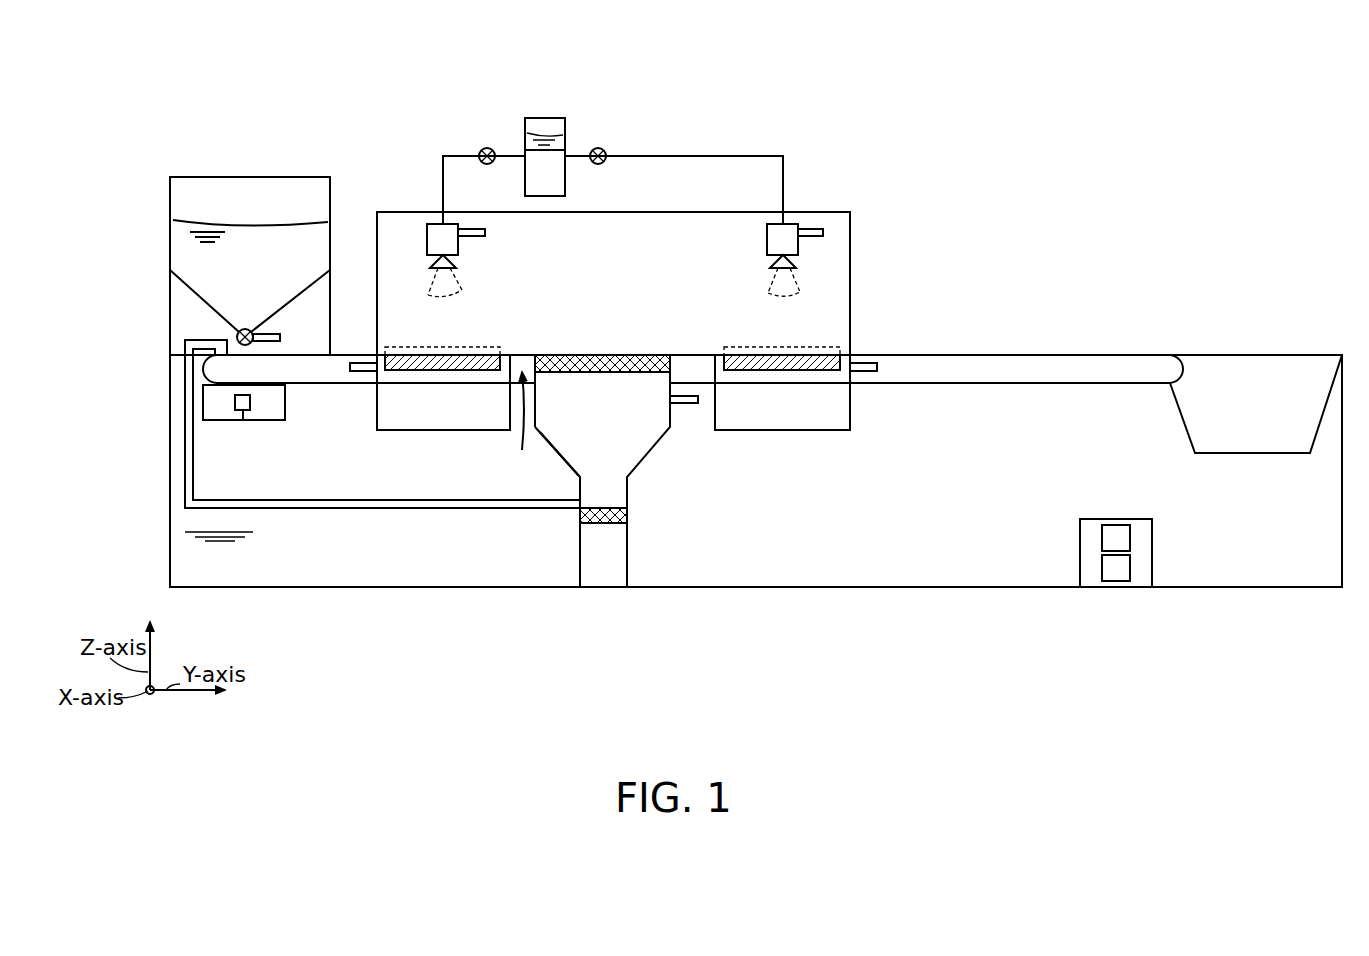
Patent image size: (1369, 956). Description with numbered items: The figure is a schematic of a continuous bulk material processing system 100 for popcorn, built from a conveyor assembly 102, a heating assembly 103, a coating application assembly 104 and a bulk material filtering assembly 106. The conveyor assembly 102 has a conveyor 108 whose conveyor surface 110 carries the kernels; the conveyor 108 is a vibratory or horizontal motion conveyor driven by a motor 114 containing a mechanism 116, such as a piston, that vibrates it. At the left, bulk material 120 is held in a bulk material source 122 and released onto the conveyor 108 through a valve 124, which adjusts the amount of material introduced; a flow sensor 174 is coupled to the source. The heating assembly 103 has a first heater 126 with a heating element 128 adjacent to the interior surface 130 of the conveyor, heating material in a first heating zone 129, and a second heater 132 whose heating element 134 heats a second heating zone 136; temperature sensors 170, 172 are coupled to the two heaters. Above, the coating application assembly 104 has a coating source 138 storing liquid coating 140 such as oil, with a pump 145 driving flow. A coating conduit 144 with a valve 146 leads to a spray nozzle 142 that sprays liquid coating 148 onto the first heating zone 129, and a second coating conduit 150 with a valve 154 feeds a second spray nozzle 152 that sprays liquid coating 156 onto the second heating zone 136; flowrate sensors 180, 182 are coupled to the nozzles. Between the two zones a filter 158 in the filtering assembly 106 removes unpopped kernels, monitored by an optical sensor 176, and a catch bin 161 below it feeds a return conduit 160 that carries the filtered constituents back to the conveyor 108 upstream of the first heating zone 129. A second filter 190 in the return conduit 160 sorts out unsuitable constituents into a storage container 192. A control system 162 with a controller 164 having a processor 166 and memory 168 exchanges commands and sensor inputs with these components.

The bulk material processing system 100 is at (108, 126).
The conveyor assembly 102 is at (1218, 328).
The heating assembly 103 is at (868, 455).
The coating application assembly 104 is at (400, 108).
The bulk material filtering assembly 106 is at (692, 474).
The conveyor 108 is at (972, 310).
The conveyor surface 110 is at (932, 354).
The motor 114 is at (288, 398).
The mechanism 116 is at (243, 422).
The bulk material 120 is at (250, 250).
The bulk material source 122 is at (173, 180).
The valve 124 is at (246, 328).
The first heater 126 is at (380, 432).
The heating element 128 is at (391, 372).
The first heating zone 129 is at (487, 346).
The interior surface 130 is at (524, 411).
The second heater 132 is at (718, 432).
The heating element 134 is at (731, 372).
The second heating zone 136 is at (739, 346).
The coating source 138 is at (546, 117).
The liquid coating 140 is at (537, 176).
The spray nozzle 142 is at (458, 266).
The coating conduit 144 is at (443, 182).
The pump 145 is at (550, 158).
The valve 146 is at (487, 147).
The liquid coating 148 is at (458, 290).
The second coating conduit 150 is at (784, 180).
The second spray nozzle 152 is at (790, 269).
The valve 154 is at (598, 147).
The liquid coating 156 is at (770, 290).
The filter 158 is at (600, 373).
The return conduit 160 is at (378, 500).
The catch bin 161 is at (561, 456).
The control system 162 is at (1198, 539).
The controller 164 is at (1085, 520).
The processor 166 is at (1131, 538).
The memory 168 is at (1131, 568).
The temperature sensor 170 is at (360, 373).
The temperature sensor 172 is at (862, 373).
The flow sensor 174 is at (276, 334).
The sensor 176 is at (690, 404).
The flowrate sensor 180 is at (478, 237).
The flowrate sensor 182 is at (806, 237).
The second filter 190 is at (629, 515).
The storage container 192 is at (579, 556).